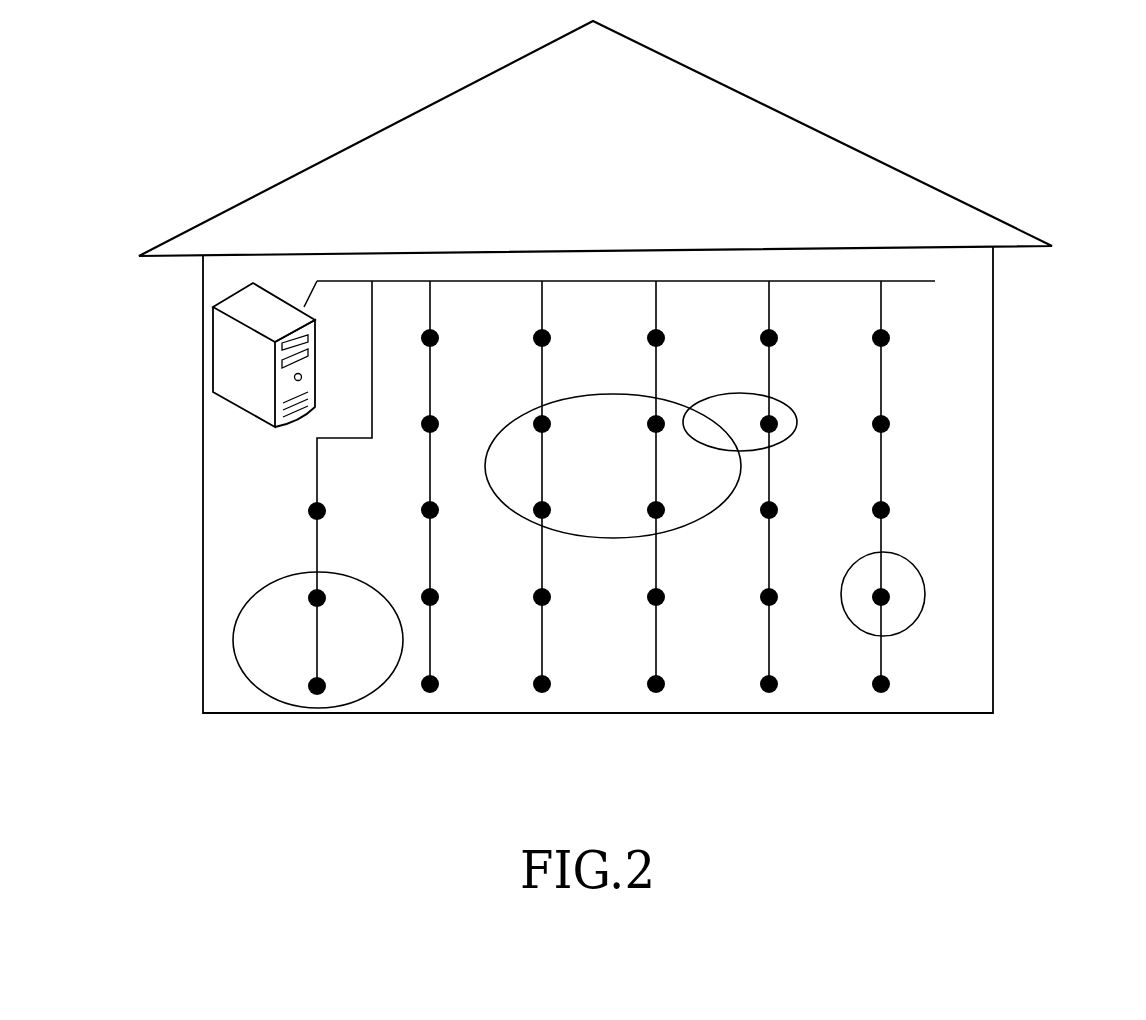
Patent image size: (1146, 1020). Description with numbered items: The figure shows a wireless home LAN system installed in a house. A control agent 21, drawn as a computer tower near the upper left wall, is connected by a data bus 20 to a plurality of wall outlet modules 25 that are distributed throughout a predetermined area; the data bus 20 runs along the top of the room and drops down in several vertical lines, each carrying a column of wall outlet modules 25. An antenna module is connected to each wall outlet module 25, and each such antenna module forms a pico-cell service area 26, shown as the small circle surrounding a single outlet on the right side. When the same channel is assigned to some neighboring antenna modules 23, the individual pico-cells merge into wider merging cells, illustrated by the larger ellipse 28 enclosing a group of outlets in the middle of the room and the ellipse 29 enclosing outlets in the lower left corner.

The data bus 20 is at (317, 482).
The control agent 21 is at (214, 350).
The neighboring antenna modules 23 is at (310, 692).
The wall outlet module 25 is at (425, 692).
The pico-cell service area 26 is at (857, 630).
The merging cell 28 is at (605, 540).
The merging cell 29 is at (233, 640).